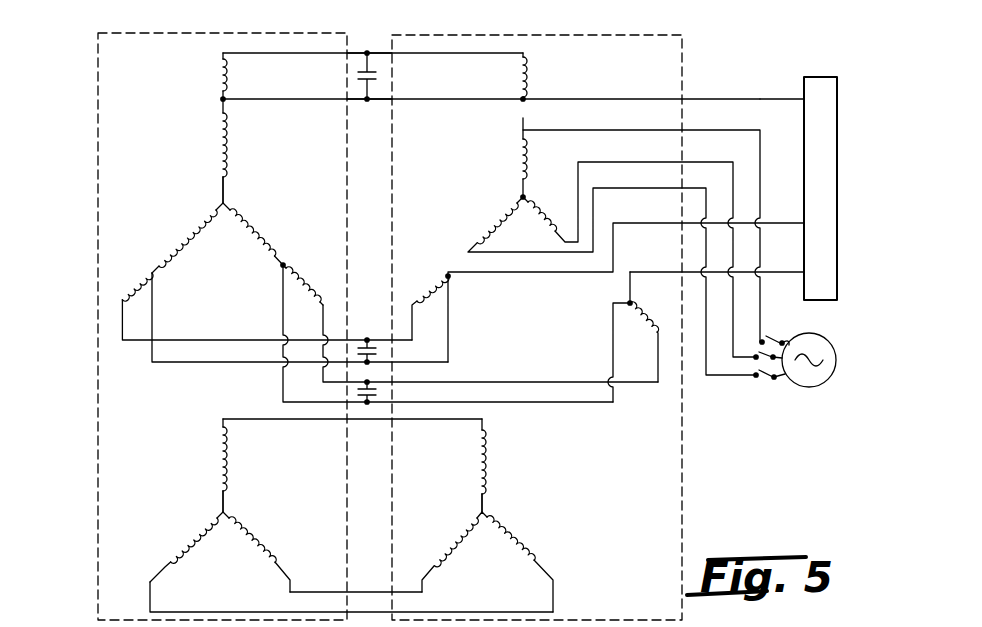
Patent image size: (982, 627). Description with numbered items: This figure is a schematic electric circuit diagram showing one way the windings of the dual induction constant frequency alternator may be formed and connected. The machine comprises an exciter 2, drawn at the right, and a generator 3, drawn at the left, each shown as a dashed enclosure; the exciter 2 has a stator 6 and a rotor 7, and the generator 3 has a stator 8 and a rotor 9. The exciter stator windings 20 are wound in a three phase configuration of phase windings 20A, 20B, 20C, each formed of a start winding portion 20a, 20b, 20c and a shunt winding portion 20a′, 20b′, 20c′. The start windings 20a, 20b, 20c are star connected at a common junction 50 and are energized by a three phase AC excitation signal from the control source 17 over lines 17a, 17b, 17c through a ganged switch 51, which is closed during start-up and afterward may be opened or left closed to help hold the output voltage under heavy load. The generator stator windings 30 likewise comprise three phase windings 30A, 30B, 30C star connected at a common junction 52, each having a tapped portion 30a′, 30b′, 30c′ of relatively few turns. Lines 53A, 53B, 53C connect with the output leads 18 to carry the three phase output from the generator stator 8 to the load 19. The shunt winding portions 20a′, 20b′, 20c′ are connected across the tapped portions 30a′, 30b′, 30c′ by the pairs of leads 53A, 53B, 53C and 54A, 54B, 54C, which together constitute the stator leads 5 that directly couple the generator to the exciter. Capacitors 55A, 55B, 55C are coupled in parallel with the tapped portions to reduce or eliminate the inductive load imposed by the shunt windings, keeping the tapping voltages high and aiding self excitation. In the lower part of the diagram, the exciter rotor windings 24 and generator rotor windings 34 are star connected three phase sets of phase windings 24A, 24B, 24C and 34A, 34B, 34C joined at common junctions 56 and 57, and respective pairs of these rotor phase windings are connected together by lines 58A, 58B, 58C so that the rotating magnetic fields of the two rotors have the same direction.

The exciter 2 is at (603, 35).
The generator 3 is at (137, 33).
The stator leads 5 is at (366, 36).
The exciter stator 6 is at (688, 52).
The exciter rotor 7 is at (686, 528).
The generator stator 8 is at (97, 108).
The generator rotor 9 is at (97, 560).
The control source 17 is at (836, 372).
The control voltage line 17a is at (783, 341).
The control voltage line 17b is at (774, 380).
The control voltage line 17c is at (789, 345).
The output leads 18 is at (760, 98).
The electrical load 19 is at (823, 77).
The exciter stator windings 20 is at (585, 93).
The exciter stator phase winding 20A is at (524, 118).
The exciter stator phase winding 20B is at (463, 243).
The exciter stator phase winding 20C is at (603, 282).
The start winding portion 20a is at (528, 160).
The start winding portion 20b is at (495, 215).
The start winding portion 20c is at (629, 259).
The shunt winding portion 20a′ is at (520, 70).
The shunt winding portion 20b′ is at (435, 283).
The shunt winding portion 20c′ is at (655, 322).
The exciter rotor windings 24 is at (510, 470).
The exciter rotor phase winding 24A is at (490, 448).
The exciter rotor phase winding 24B is at (438, 555).
The exciter rotor phase winding 24C is at (532, 550).
The generator stator windings 30 is at (172, 100).
The generator stator phase winding 30A is at (212, 110).
The generator stator phase winding 30B is at (163, 248).
The generator stator phase winding 30C is at (283, 233).
The tapped portion 30a′ is at (228, 74).
The tapped portion 30b′ is at (132, 284).
The tapped portion 30c′ is at (310, 280).
The generator rotor windings 34 is at (200, 470).
The generator rotor phase winding 34A is at (232, 448).
The generator rotor phase winding 34B is at (175, 552).
The generator rotor phase winding 34C is at (262, 545).
The common junction 50 is at (527, 193).
The ganged switch 51 is at (760, 385).
The common junction 52 is at (220, 210).
The line 53A is at (296, 99).
The line 53B is at (152, 302).
The line 53C is at (283, 297).
The lead 54A is at (240, 52).
The lead 54B is at (130, 345).
The lead 54C is at (330, 308).
The capacitor 55A is at (378, 72).
The capacitor 55B is at (362, 345).
The capacitor 55C is at (378, 393).
The common junction 56 is at (480, 510).
The common junction 57 is at (230, 510).
The line 58A is at (250, 418).
The line 58B is at (195, 612).
The line 58C is at (320, 592).